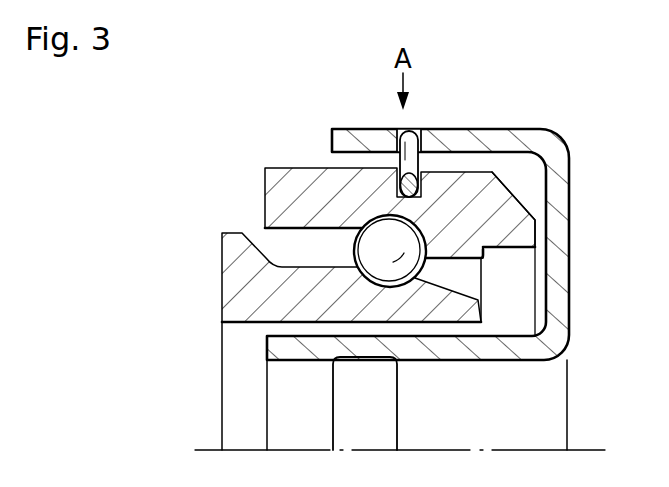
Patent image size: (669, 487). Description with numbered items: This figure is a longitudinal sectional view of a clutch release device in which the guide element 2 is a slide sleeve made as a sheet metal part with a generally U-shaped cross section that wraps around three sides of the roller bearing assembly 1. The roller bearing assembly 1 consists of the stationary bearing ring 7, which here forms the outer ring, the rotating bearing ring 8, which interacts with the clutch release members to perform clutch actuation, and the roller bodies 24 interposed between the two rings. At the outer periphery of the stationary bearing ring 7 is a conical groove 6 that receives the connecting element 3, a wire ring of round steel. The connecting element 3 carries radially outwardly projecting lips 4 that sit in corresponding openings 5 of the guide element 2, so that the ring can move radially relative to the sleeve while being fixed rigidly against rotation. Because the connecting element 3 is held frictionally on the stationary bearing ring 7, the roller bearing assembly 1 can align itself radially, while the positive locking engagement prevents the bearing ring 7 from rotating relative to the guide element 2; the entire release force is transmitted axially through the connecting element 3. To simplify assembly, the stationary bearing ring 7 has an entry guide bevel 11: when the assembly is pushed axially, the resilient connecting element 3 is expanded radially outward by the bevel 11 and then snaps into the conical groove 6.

The roller bearing assembly 1 is at (405, 294).
The guide element 2 is at (553, 348).
The connecting element 3 is at (425, 157).
The radially outwardly projecting lips 4 is at (398, 130).
The openings 5 is at (430, 128).
The conical groove 6 is at (398, 184).
The stationary bearing ring 7 is at (282, 196).
The rotating bearing ring 8 is at (238, 293).
The entry guide bevel 11 is at (493, 198).
The roller bodies 24 is at (418, 276).